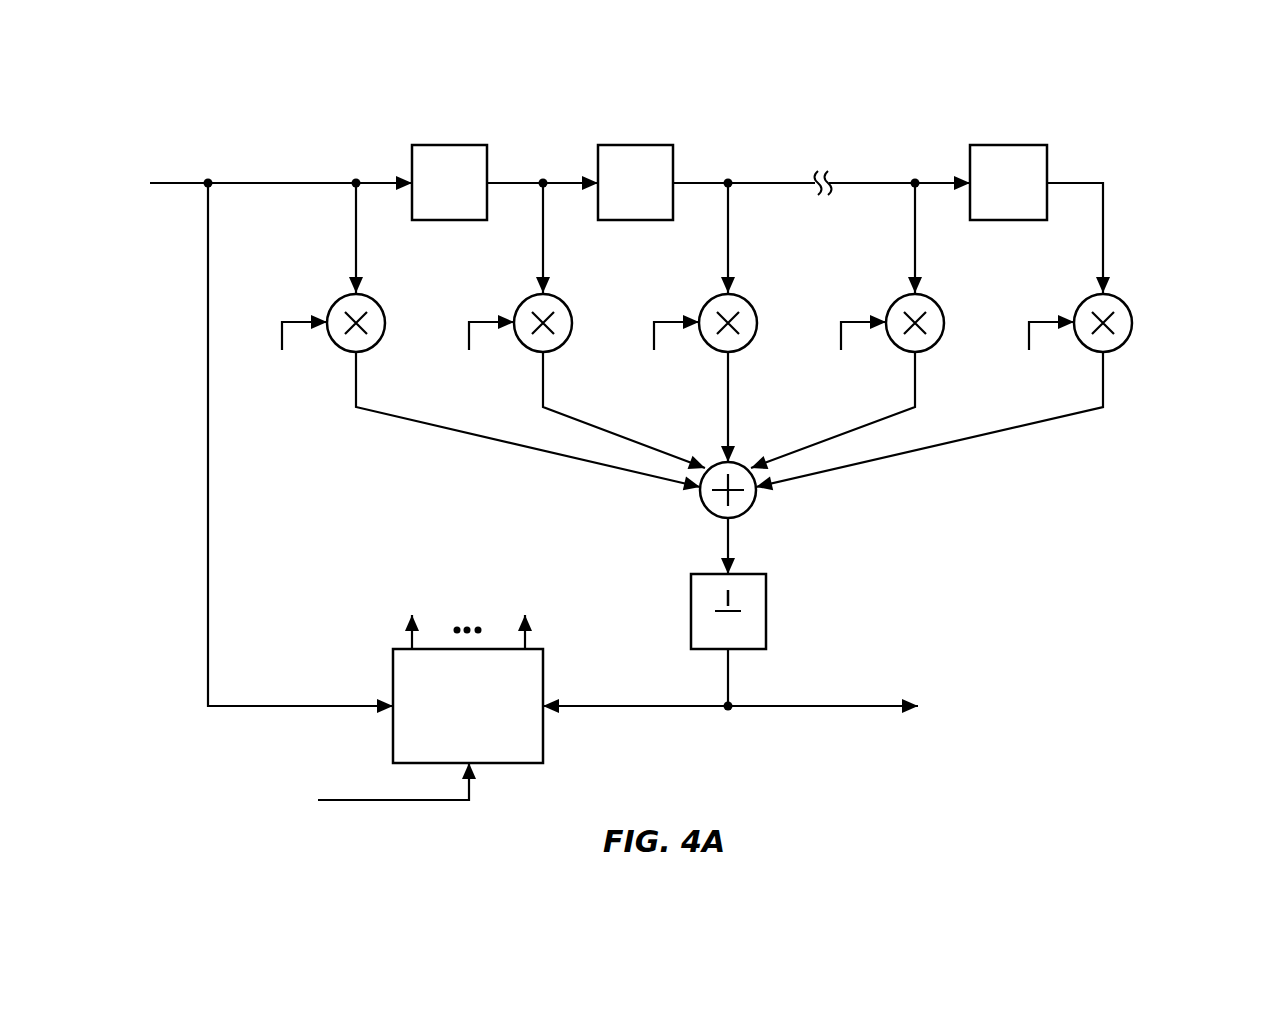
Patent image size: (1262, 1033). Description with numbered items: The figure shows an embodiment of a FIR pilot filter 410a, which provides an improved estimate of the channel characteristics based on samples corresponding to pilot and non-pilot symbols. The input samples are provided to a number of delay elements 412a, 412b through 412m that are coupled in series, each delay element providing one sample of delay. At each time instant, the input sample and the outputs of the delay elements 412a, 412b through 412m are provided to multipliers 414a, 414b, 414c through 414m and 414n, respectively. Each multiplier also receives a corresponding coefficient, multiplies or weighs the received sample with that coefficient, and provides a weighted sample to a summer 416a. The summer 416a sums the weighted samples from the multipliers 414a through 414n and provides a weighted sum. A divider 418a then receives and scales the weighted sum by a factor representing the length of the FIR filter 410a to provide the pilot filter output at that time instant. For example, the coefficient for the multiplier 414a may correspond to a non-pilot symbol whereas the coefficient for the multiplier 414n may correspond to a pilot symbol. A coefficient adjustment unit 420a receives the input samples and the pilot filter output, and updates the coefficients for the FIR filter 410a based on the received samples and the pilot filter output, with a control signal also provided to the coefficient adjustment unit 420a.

The FIR pilot filter 410a is at (1220, 90).
The delay element 412a is at (438, 145).
The delay element 412b is at (624, 145).
The delay element 412m is at (1012, 128).
The multiplier 414a is at (388, 295).
The multiplier 414b is at (575, 295).
The multiplier 414c is at (760, 295).
The multiplier 414m is at (947, 296).
The multiplier 414n is at (1135, 296).
The summer 416a is at (748, 514).
The divider 418a is at (768, 619).
The coefficient adjustment unit 420a is at (546, 670).